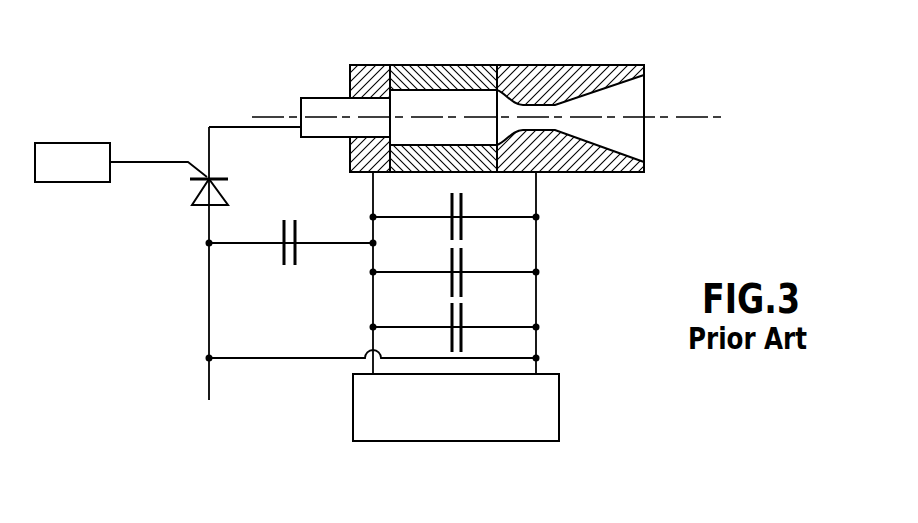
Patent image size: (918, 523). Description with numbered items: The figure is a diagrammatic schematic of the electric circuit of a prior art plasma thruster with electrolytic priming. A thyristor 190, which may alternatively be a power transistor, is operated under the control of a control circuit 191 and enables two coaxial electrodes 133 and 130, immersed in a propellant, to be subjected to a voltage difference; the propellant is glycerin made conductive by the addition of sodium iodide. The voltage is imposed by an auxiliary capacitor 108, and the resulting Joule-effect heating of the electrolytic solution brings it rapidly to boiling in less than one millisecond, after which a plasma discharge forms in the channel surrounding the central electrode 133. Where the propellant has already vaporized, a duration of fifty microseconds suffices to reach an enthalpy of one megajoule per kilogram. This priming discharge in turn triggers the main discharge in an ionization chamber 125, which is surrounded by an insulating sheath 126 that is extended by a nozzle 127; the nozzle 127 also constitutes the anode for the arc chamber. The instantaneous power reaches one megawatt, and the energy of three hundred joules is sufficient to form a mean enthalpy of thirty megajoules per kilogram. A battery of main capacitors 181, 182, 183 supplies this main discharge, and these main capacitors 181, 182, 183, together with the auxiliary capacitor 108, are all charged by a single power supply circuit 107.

The power supply circuit 107 is at (455, 427).
The auxiliary capacitor 108 is at (288, 254).
The ionization chamber 125 is at (442, 106).
The insulating sheath 126 is at (477, 65).
The nozzle 127 is at (558, 72).
The coaxial electrode 130 is at (367, 65).
The central electrode 133 is at (320, 112).
The main capacitor 181 is at (457, 205).
The main capacitor 182 is at (457, 262).
The main capacitor 183 is at (455, 318).
The thyristor 190 is at (198, 192).
The control circuit 191 is at (72, 160).